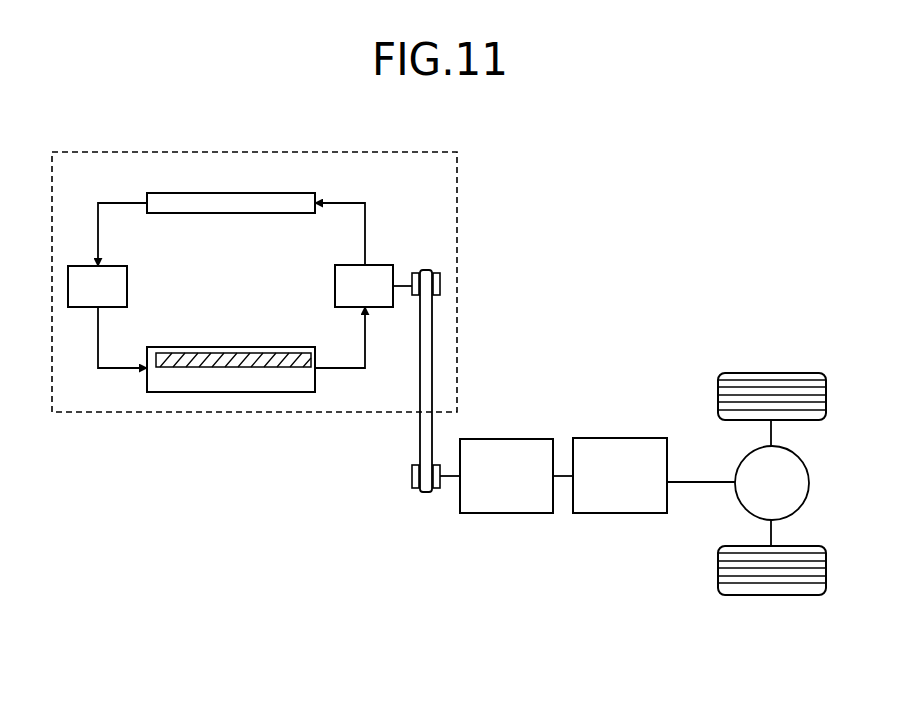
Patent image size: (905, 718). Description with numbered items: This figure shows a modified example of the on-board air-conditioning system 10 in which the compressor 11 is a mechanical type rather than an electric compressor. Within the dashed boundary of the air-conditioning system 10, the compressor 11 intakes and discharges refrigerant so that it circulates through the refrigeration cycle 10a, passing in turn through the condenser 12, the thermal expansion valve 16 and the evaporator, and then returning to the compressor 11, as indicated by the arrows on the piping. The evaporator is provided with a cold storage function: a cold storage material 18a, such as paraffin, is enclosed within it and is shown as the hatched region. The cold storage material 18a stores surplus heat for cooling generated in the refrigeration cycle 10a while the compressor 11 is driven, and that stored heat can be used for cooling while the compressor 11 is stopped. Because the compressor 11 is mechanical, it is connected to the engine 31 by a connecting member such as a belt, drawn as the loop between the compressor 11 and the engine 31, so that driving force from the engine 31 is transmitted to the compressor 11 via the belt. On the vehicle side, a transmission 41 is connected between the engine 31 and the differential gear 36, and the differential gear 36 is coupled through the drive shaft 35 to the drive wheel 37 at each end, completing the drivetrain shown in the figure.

The air-conditioning system 10 is at (382, 136).
The refrigeration cycle 10a is at (340, 203).
The compressor 11 is at (380, 265).
The condenser 12 is at (284, 193).
The thermal expansion valve 16 is at (127, 287).
The cold storage material 18a is at (315, 383).
The engine 31 is at (540, 439).
The drive shaft 35 is at (698, 482).
The differential gear 36 is at (800, 459).
The drive wheel 37 is at (795, 373).
The transmission 41 is at (650, 438).